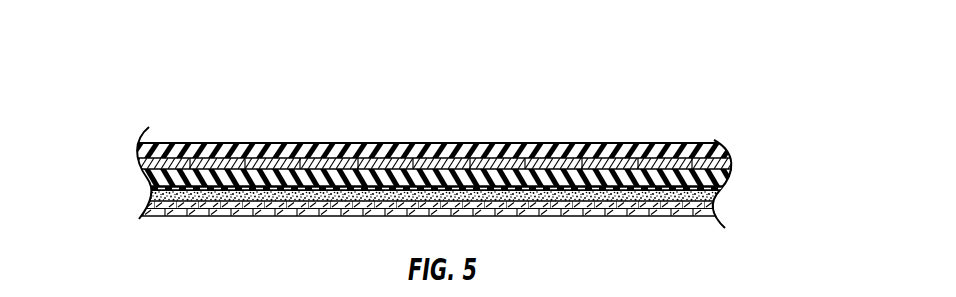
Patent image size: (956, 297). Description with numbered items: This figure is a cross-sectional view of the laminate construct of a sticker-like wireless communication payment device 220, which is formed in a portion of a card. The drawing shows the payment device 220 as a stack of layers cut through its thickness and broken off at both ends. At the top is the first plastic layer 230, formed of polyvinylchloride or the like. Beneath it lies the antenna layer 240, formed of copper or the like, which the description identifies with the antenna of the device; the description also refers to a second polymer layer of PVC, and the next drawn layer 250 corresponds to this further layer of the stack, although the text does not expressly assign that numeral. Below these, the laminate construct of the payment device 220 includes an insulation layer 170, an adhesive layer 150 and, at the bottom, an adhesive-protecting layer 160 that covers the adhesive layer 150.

The payment device 220 is at (411, 130).
The first plastic layer 230 is at (718, 152).
The antenna layer 240 is at (727, 167).
The third layer 250 is at (717, 185).
The insulation layer 170 is at (150, 188).
The adhesive layer 150 is at (150, 196).
The adhesive-protecting layer 160 is at (162, 219).